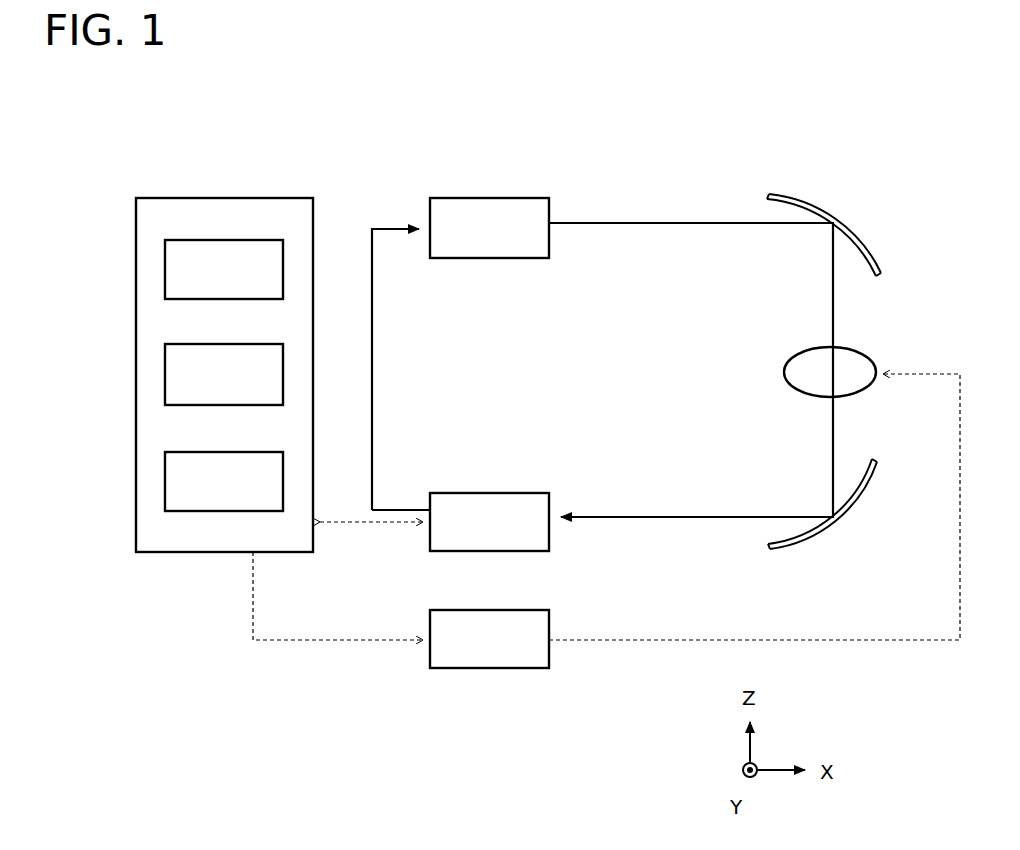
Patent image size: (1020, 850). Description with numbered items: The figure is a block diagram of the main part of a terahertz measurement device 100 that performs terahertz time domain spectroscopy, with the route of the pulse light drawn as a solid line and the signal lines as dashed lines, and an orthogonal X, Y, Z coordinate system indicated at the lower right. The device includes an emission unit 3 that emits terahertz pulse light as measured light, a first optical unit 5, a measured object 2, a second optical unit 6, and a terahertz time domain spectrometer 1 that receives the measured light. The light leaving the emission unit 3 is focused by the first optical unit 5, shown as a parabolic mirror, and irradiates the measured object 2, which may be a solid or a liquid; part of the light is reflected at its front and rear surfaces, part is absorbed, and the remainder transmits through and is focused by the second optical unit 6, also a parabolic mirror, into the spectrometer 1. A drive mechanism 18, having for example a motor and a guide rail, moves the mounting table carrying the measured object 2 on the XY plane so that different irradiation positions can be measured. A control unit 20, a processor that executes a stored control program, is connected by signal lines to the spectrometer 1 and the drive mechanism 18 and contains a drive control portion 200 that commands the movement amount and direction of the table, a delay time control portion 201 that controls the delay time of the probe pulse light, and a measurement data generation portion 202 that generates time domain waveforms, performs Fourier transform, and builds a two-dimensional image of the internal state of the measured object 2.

The terahertz measurement device 100 is at (640, 135).
The control unit 20 is at (136, 203).
The drive control portion 200 is at (165, 265).
The delay time control portion 201 is at (165, 369).
The measurement data generation portion 202 is at (165, 477).
The emission unit 3 is at (547, 198).
The terahertz time domain spectrometer 1 is at (549, 550).
The drive mechanism 18 is at (520, 668).
The first optical unit 5 is at (830, 212).
The second optical unit 6 is at (863, 487).
The measured object 2 is at (866, 369).